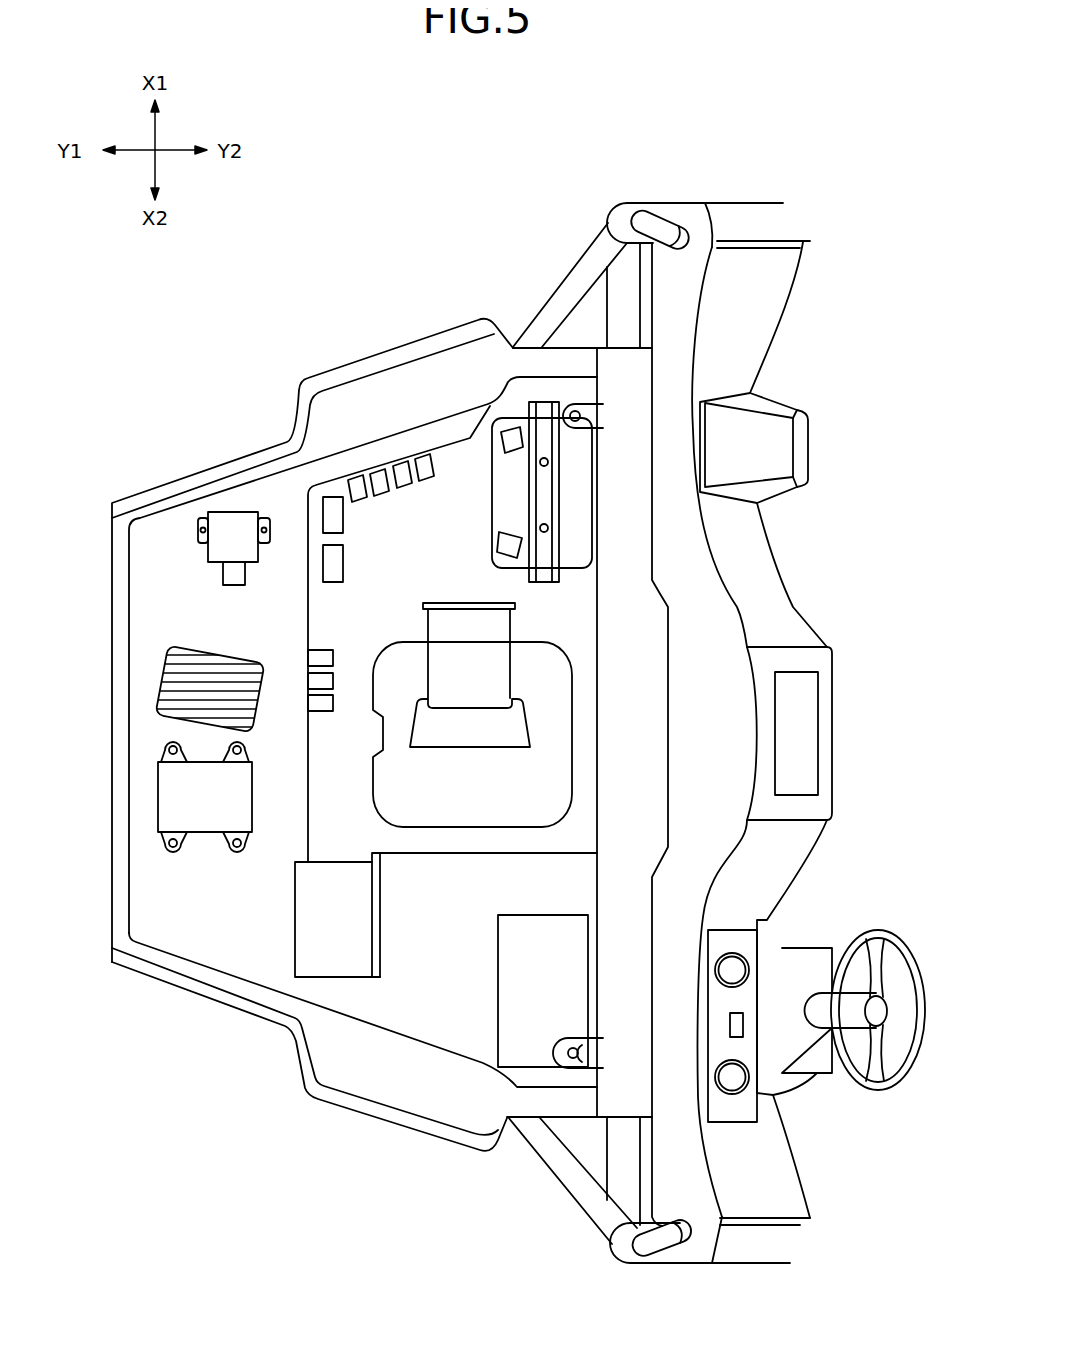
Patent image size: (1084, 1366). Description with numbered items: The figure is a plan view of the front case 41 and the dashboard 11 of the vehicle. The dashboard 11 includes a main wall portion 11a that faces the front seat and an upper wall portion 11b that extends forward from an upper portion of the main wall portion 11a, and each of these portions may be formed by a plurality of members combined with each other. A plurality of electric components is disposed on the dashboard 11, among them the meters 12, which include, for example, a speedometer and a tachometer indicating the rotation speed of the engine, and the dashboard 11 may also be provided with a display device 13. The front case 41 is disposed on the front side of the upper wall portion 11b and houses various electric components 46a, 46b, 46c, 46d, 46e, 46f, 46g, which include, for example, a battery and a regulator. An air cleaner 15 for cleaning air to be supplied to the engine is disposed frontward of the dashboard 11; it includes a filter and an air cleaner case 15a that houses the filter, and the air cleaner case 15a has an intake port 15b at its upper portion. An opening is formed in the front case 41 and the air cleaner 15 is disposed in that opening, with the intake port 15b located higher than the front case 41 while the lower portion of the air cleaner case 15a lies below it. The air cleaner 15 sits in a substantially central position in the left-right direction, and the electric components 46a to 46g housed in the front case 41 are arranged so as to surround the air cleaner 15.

The dashboard 11 is at (686, 733).
The main wall portion 11a is at (760, 563).
The upper wall portion 11b is at (683, 527).
The meters 12 is at (735, 1075).
The display device 13 is at (807, 717).
The air cleaner 15 is at (511, 681).
The air cleaner case 15a is at (557, 698).
The intake port 15b is at (466, 601).
The front case 41 is at (405, 335).
The electric component 46a is at (522, 398).
The electric component 46b is at (233, 516).
The electric component 46c is at (158, 692).
The electric component 46d is at (158, 797).
The electric component 46e is at (295, 913).
The electric component 46f is at (498, 984).
The electric component 46g is at (332, 681).